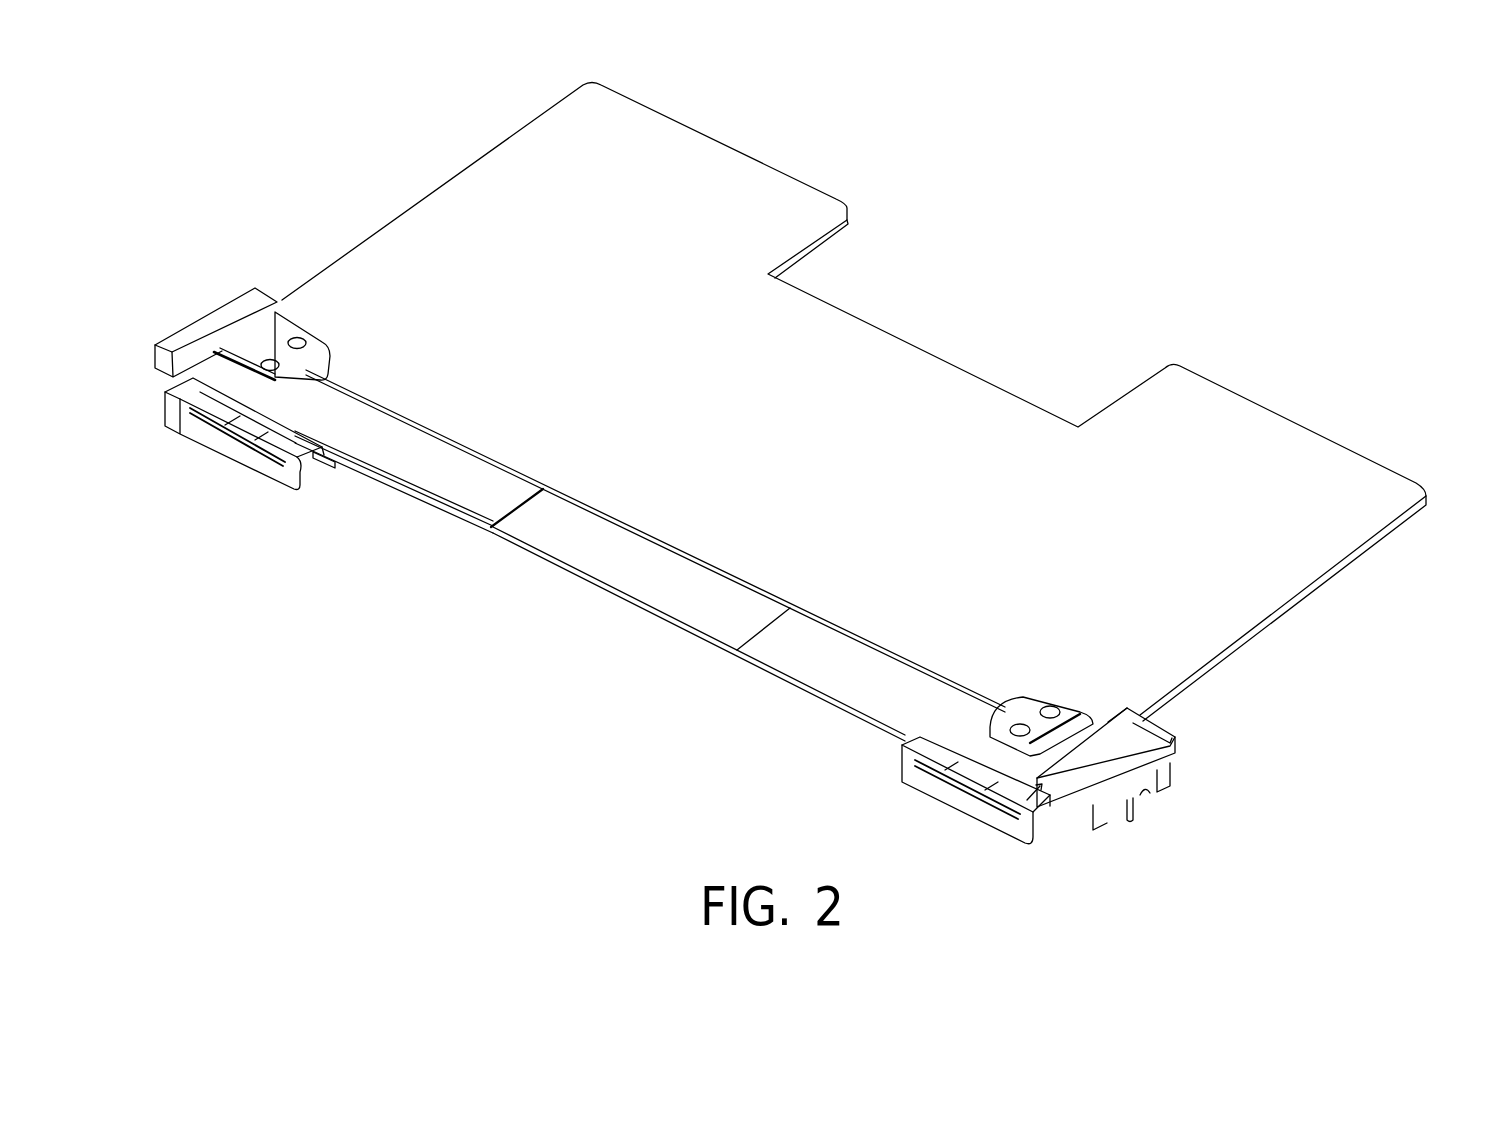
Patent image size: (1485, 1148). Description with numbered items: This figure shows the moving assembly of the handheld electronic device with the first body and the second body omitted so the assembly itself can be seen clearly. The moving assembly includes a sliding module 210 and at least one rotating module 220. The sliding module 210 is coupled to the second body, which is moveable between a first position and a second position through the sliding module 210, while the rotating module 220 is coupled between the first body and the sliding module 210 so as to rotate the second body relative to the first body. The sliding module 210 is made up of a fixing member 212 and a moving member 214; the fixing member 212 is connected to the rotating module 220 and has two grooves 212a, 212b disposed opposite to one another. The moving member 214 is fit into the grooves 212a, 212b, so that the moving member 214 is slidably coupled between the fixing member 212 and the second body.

The sliding module 210 is at (874, 425).
The moving member 214 is at (1218, 575).
The fixing member 212 is at (1168, 757).
The groove 212a is at (1007, 823).
The groove 212b is at (178, 370).
The rotating module 220 is at (1048, 823).